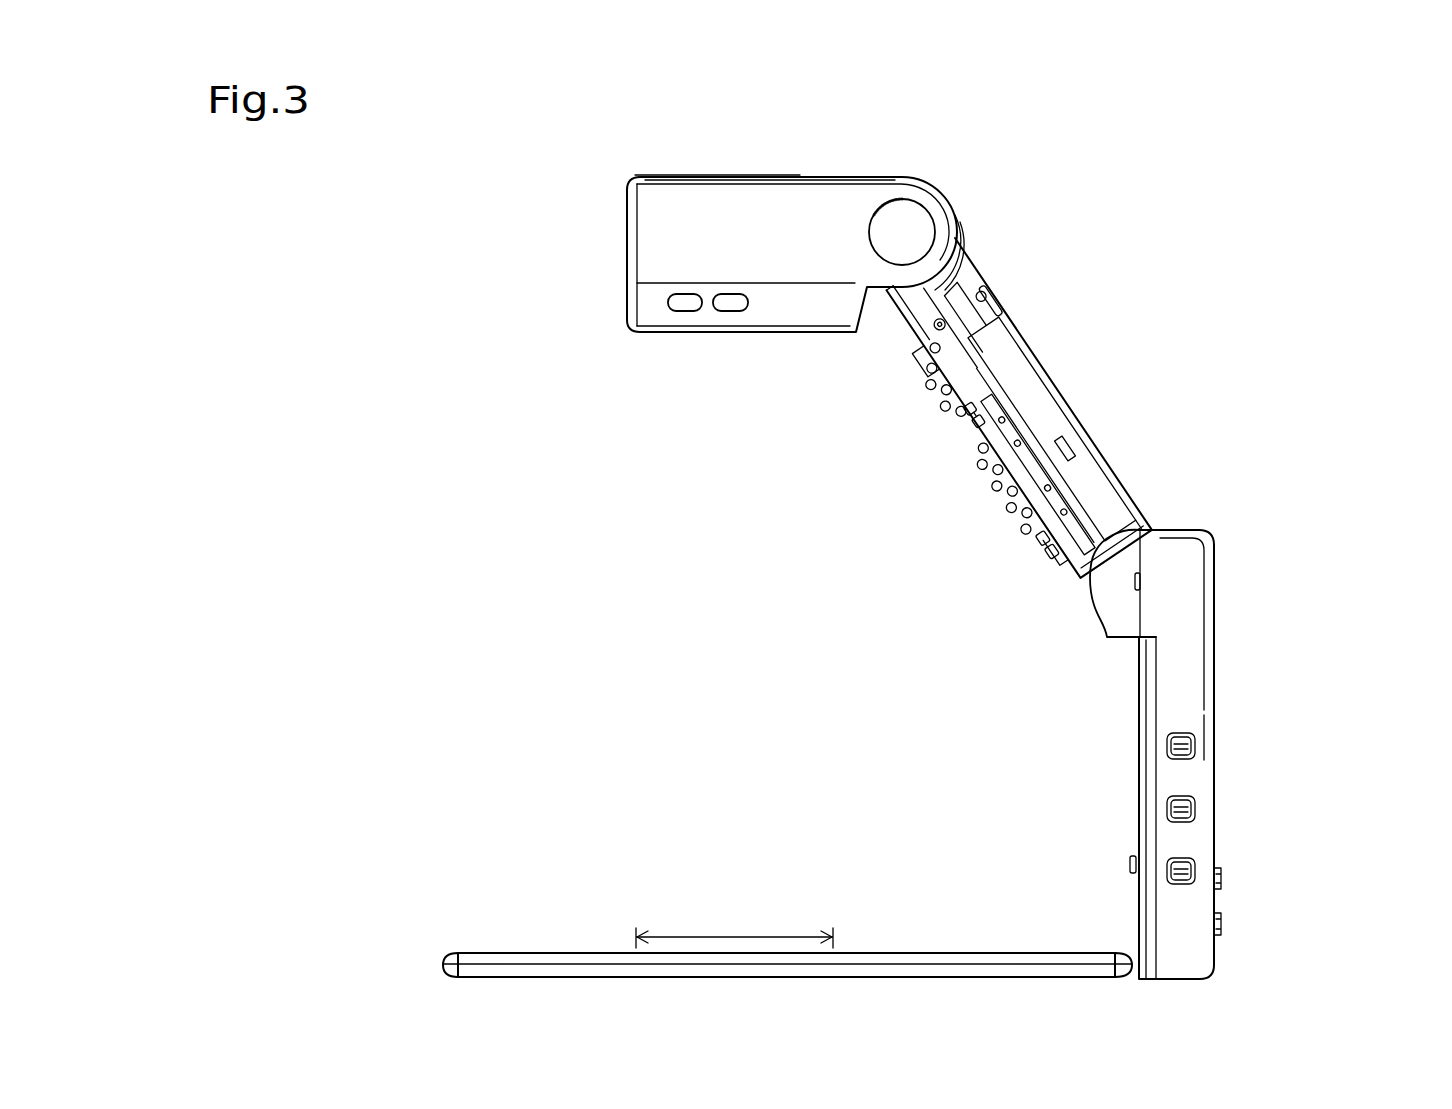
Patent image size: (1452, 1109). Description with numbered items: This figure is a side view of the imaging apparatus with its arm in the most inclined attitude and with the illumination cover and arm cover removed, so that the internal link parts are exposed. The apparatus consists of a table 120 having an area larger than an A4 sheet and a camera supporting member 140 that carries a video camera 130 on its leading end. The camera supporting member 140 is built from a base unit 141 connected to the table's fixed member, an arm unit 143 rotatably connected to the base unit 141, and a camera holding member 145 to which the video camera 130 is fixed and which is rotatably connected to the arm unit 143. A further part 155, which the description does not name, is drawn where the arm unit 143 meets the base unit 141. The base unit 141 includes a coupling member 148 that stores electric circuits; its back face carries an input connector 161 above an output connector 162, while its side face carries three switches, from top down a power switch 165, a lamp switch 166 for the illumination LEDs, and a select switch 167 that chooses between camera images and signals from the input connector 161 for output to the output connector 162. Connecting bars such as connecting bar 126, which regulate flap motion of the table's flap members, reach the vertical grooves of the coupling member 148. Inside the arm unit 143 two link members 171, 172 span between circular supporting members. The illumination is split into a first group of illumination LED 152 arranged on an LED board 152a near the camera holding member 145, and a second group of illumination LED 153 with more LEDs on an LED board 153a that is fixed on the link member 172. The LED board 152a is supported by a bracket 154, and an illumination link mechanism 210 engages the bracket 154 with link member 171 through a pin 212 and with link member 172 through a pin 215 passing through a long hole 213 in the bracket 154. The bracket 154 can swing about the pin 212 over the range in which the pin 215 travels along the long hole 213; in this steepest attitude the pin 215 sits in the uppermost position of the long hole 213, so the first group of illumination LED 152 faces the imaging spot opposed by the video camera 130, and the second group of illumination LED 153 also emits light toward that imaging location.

The table 120 is at (866, 940).
The connecting bar 126 is at (1140, 897).
The video camera 130 is at (702, 340).
The camera supporting member 140 is at (1143, 285).
The base unit 141 is at (1230, 628).
The arm unit 143 is at (1048, 245).
The camera holding member 145 is at (853, 185).
The coupling member 148 is at (1203, 777).
The first group of illumination LED 152 is at (917, 399).
The LED board 152a is at (925, 349).
The second group of illumination LED 153 is at (1002, 512).
The LED board 153a is at (1050, 553).
The bracket 154 is at (968, 425).
The hinge cover 155 is at (1085, 506).
The input connector 161 is at (1222, 878).
The output connector 162 is at (1222, 925).
The power switch 165 is at (1197, 870).
The lamp switch 166 is at (1197, 810).
The select switch 167 is at (1197, 750).
The link member 171 is at (1063, 407).
The link member 172 is at (960, 275).
The illumination link mechanism 210 is at (968, 291).
The pin 212 is at (987, 297).
The long hole 213 is at (958, 398).
The pin 215 is at (958, 340).